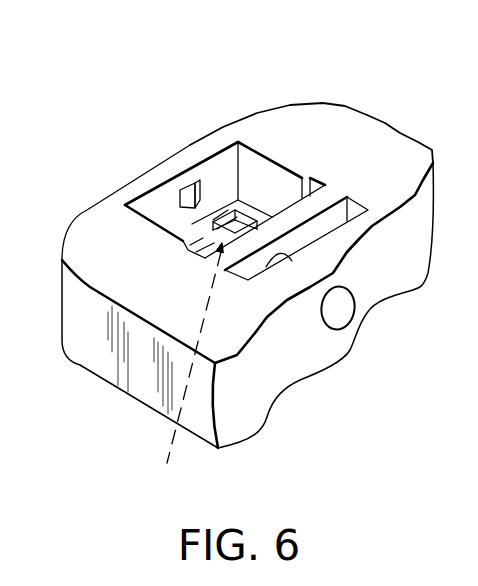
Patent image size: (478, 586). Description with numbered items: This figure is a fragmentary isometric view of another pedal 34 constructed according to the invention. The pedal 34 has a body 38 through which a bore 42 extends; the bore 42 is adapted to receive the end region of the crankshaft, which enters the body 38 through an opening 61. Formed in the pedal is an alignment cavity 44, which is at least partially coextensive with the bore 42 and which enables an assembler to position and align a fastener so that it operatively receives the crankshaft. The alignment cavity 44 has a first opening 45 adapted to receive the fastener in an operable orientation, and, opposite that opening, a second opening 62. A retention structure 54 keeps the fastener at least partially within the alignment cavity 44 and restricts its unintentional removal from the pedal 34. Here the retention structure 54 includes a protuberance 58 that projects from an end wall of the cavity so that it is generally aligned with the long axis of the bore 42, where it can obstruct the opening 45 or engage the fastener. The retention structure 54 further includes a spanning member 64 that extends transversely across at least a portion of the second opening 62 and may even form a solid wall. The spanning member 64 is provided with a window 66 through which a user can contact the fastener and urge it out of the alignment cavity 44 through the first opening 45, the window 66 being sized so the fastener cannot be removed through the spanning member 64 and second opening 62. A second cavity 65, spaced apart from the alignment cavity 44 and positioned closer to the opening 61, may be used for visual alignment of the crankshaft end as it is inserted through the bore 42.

The pedal 34 is at (400, 90).
The body 38 is at (383, 147).
The bore 42 is at (350, 313).
The alignment cavity 44 is at (150, 208).
The opening 45 is at (255, 152).
The retention structure 54 is at (175, 227).
The protuberance 58 is at (193, 183).
The opening 61 is at (353, 290).
The second opening 62 is at (184, 370).
The spanning member 64 is at (248, 210).
The second cavity 65 is at (320, 240).
The window 66 is at (207, 249).